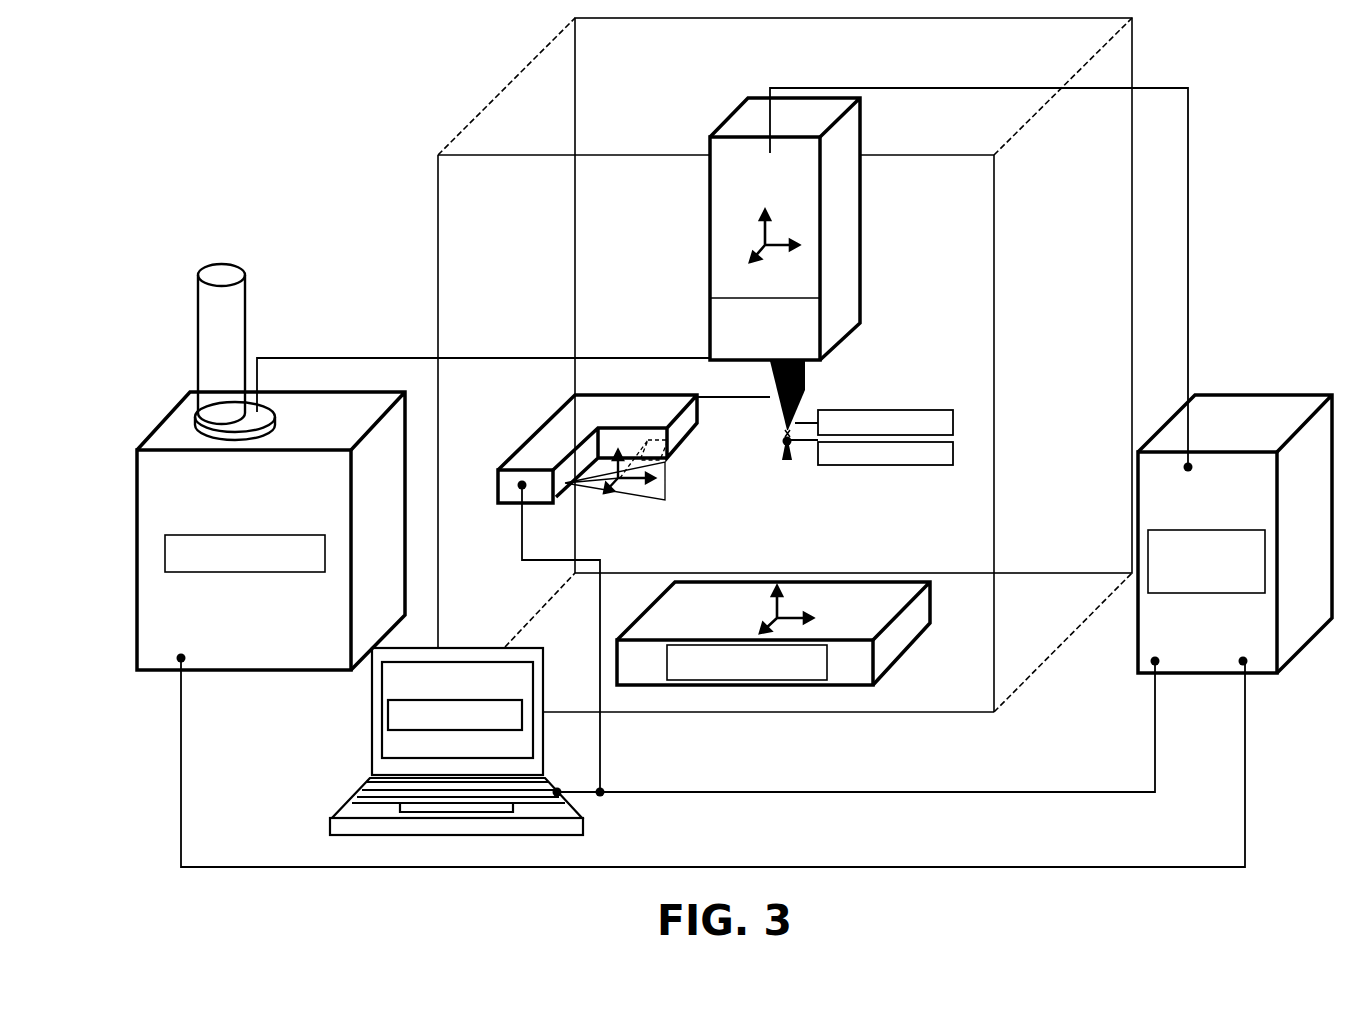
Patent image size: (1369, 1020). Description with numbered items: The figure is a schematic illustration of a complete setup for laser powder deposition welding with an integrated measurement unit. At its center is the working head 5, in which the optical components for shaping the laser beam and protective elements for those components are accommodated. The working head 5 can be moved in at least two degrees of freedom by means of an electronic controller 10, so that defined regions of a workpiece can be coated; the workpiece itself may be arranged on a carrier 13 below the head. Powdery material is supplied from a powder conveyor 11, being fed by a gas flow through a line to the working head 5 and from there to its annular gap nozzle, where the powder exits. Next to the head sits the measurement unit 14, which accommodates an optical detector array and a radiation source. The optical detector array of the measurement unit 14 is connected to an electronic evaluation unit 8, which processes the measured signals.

The working head 5 is at (834, 258).
The electronic evaluation unit 8 is at (397, 742).
The electronic controller 10 is at (1238, 420).
The powder conveyor 11 is at (185, 480).
The carrier 13 is at (888, 657).
The measurement unit 14 is at (560, 423).